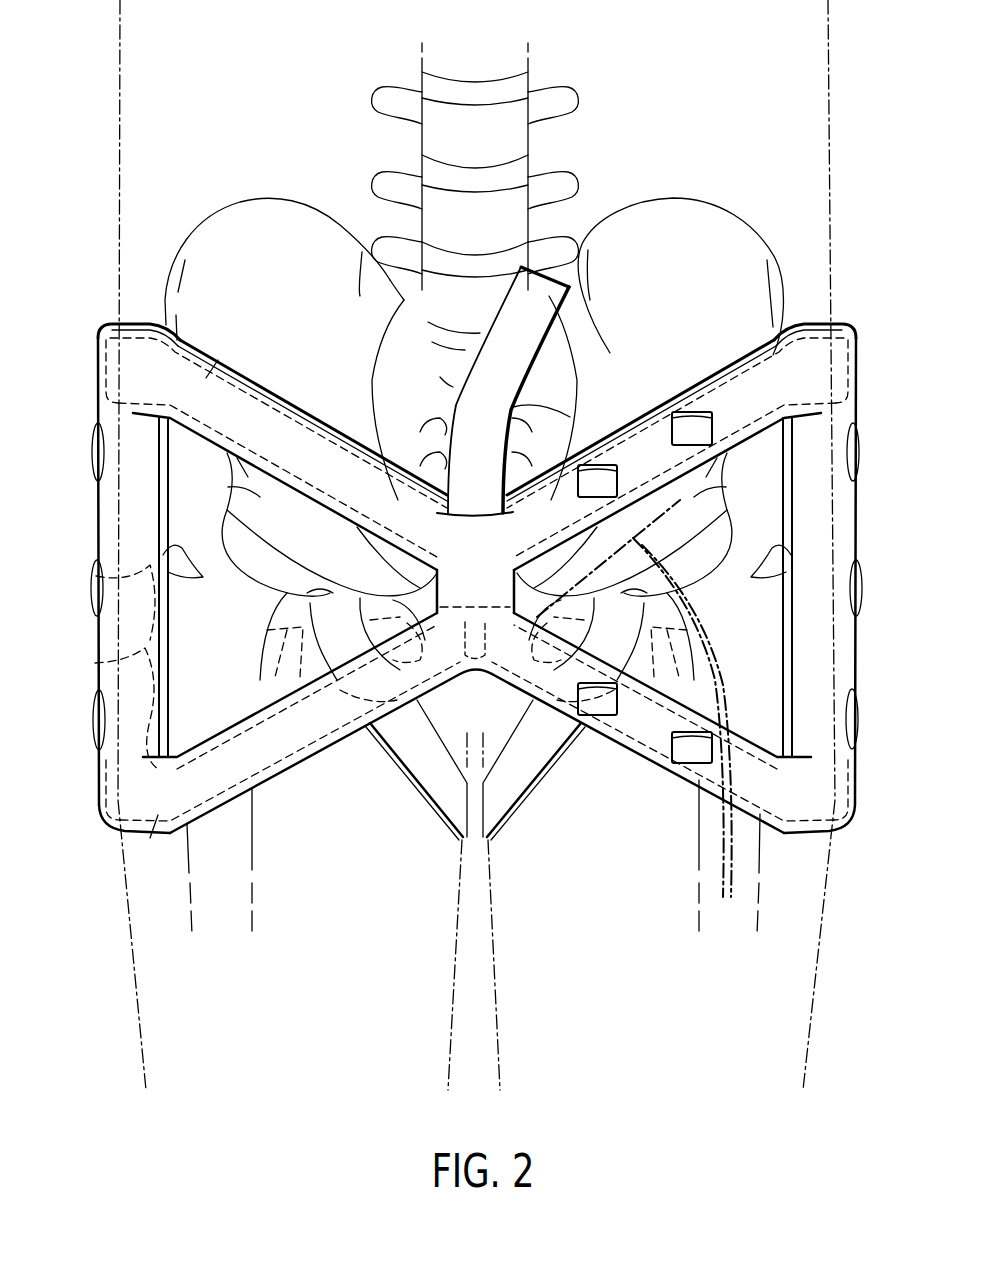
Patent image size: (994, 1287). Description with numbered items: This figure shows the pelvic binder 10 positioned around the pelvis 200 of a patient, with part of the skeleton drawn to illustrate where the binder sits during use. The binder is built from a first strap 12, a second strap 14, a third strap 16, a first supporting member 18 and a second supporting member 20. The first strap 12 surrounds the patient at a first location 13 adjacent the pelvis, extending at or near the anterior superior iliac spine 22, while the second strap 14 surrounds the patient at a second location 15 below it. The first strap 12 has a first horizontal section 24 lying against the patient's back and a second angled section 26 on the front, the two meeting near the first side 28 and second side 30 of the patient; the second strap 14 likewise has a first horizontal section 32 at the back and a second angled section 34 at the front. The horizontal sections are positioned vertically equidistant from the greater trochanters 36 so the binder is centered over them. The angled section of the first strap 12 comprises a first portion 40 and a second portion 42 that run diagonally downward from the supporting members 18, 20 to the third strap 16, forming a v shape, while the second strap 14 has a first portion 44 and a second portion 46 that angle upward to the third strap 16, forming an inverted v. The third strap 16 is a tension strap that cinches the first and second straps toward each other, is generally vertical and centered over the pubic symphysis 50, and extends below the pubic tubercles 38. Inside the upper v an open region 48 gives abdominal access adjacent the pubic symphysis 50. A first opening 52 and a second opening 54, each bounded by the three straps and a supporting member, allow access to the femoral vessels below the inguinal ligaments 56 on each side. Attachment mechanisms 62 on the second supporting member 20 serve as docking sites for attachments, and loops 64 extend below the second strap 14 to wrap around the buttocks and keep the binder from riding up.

The pelvic binder 10 is at (851, 313).
The first strap 12 is at (217, 358).
The first location 13 is at (99, 314).
The second strap 14 is at (153, 835).
The second location 15 is at (83, 798).
The third strap 16 is at (527, 332).
The first supporting member 18 is at (108, 642).
The second supporting member 20 is at (847, 632).
The anterior superior iliac spine (ASIS) 22 is at (170, 317).
The first horizontal section 24 is at (148, 323).
The second angled section 26 is at (728, 425).
The first side 28 is at (101, 878).
The second side 30 is at (846, 875).
The first horizontal section 32 is at (95, 663).
The second angled section 34 is at (270, 760).
The greater trochanters 36 is at (96, 576).
The pubic tubercles 38 is at (470, 605).
The first portion 40 is at (262, 413).
The second portion 42 is at (630, 432).
The first portion 44 is at (318, 733).
The second portion 46 is at (627, 728).
The open region 48 is at (440, 475).
The pubic symphysis 50 is at (482, 672).
The first opening 52 is at (190, 530).
The second opening 54 is at (748, 602).
The inguinal ligaments 56 is at (680, 500).
The attachment mechanisms 62 is at (694, 418).
The loops 64 is at (438, 777).
The pelvis 200 is at (690, 218).